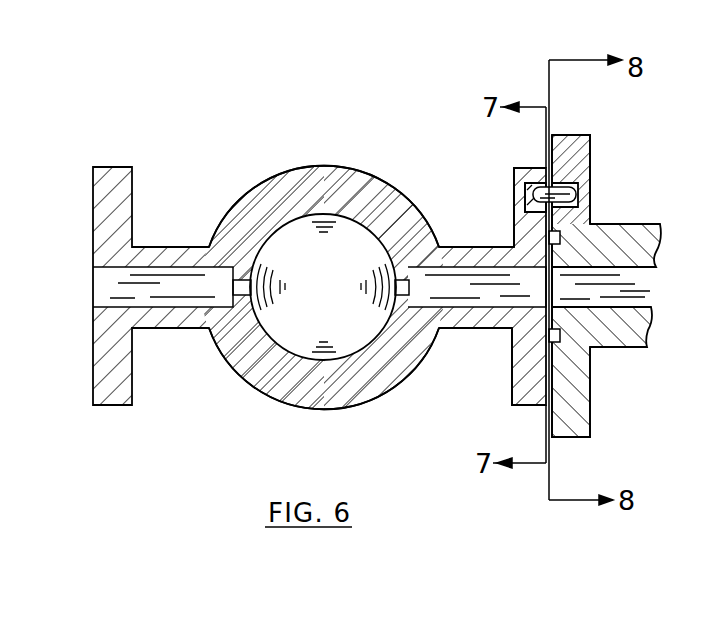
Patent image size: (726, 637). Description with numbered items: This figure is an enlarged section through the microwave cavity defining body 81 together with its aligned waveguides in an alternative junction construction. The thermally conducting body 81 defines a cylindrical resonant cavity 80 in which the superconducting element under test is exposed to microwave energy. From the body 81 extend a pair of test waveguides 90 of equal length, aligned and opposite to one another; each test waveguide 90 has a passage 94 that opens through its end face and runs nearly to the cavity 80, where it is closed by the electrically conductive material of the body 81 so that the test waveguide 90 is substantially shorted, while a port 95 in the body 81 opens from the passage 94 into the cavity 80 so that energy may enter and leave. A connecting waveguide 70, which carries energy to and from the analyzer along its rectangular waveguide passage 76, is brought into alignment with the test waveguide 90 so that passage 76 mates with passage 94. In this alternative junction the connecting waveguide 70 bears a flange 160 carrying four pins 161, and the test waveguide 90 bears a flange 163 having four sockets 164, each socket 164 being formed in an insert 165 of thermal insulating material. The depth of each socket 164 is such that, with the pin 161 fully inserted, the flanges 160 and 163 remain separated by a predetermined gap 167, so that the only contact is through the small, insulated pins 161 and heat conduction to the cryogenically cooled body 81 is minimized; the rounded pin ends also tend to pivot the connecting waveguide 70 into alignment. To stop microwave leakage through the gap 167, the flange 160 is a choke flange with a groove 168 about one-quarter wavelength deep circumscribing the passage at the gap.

The connecting waveguide 70 is at (647, 224).
The waveguide passage 76 is at (633, 293).
The resonant cavity 80 is at (336, 268).
The thermally conducting body 81 is at (311, 165).
The test waveguide 90 is at (186, 329).
The passage 94 is at (180, 284).
The port 95 is at (394, 287).
The flange 160 is at (593, 403).
The pin 161 is at (578, 193).
The flange 163 is at (507, 405).
The socket 164 is at (571, 186).
The insert 165 is at (536, 169).
The gap 167 is at (546, 410).
The groove 168 is at (562, 343).